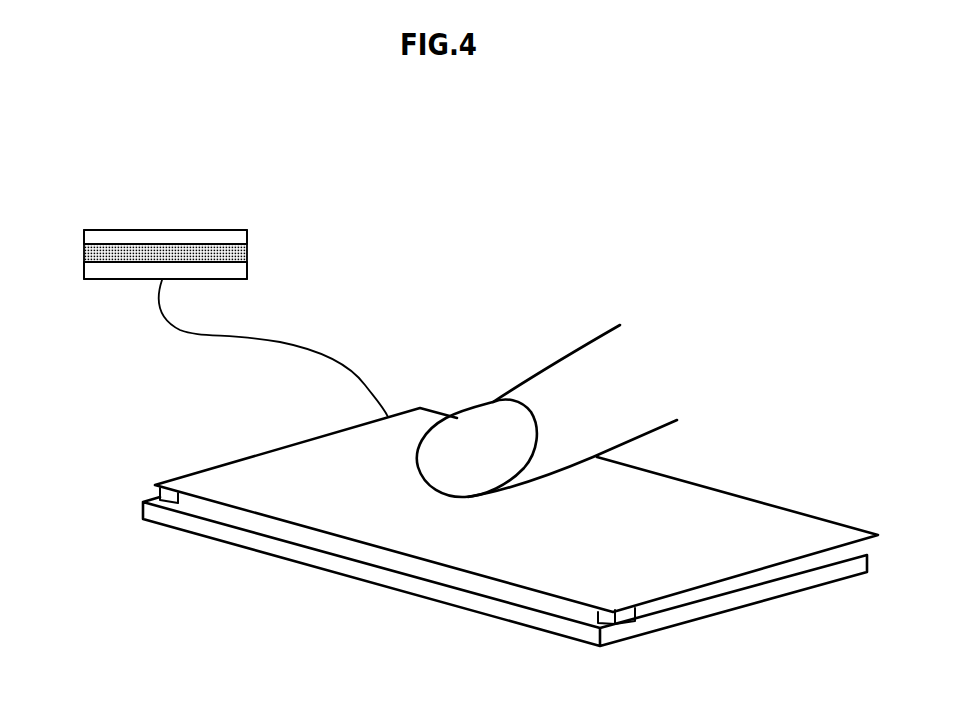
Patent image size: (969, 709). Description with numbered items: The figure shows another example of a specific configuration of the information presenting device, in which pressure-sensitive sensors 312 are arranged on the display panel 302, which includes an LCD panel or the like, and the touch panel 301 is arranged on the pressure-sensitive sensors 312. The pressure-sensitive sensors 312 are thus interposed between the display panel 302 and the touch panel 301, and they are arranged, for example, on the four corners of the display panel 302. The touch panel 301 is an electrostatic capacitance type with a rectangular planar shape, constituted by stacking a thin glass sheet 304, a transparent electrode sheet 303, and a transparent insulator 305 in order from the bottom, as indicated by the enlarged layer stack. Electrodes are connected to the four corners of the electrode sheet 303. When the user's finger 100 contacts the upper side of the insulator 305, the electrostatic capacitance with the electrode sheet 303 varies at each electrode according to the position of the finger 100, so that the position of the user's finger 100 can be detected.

The user's finger 100 is at (608, 383).
The touch panel 301 is at (245, 457).
The display panel 302 is at (307, 557).
The transparent electrode sheet 303 is at (85, 253).
The glass sheet 304 is at (108, 273).
The transparent insulator 305 is at (112, 237).
The pressure-sensitive sensors 312 is at (164, 500).